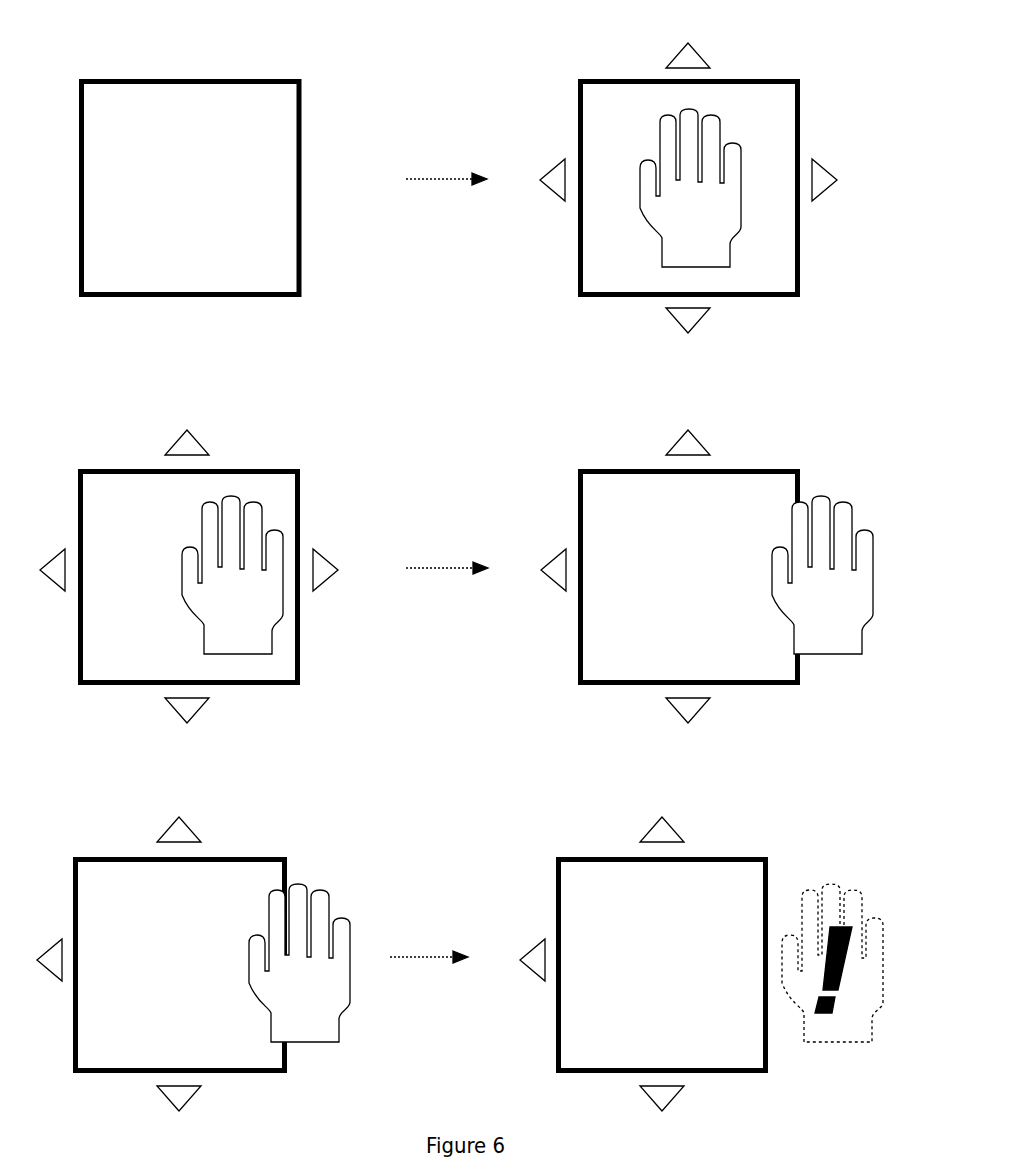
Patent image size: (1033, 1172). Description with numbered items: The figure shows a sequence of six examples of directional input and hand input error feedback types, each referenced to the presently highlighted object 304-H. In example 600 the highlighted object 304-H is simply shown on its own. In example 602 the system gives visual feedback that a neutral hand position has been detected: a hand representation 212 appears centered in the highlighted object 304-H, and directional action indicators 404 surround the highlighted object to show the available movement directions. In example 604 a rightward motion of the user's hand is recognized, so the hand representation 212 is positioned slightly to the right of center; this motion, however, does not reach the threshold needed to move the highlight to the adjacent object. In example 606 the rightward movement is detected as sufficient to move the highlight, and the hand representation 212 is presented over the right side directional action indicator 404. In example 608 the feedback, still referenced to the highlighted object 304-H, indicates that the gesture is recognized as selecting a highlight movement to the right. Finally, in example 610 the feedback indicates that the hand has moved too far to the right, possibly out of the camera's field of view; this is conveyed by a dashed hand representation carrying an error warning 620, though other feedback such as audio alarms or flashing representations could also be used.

The example 600 is at (148, 45).
The example 602 is at (618, 45).
The example 604 is at (148, 433).
The example 606 is at (618, 433).
The example 608 is at (148, 805).
The example 610 is at (618, 805).
The highlighted object 304-H is at (300, 228).
The directional action indicators 404 is at (546, 188).
The hand representation 212 is at (708, 234).
The error warning 620 is at (830, 1030).